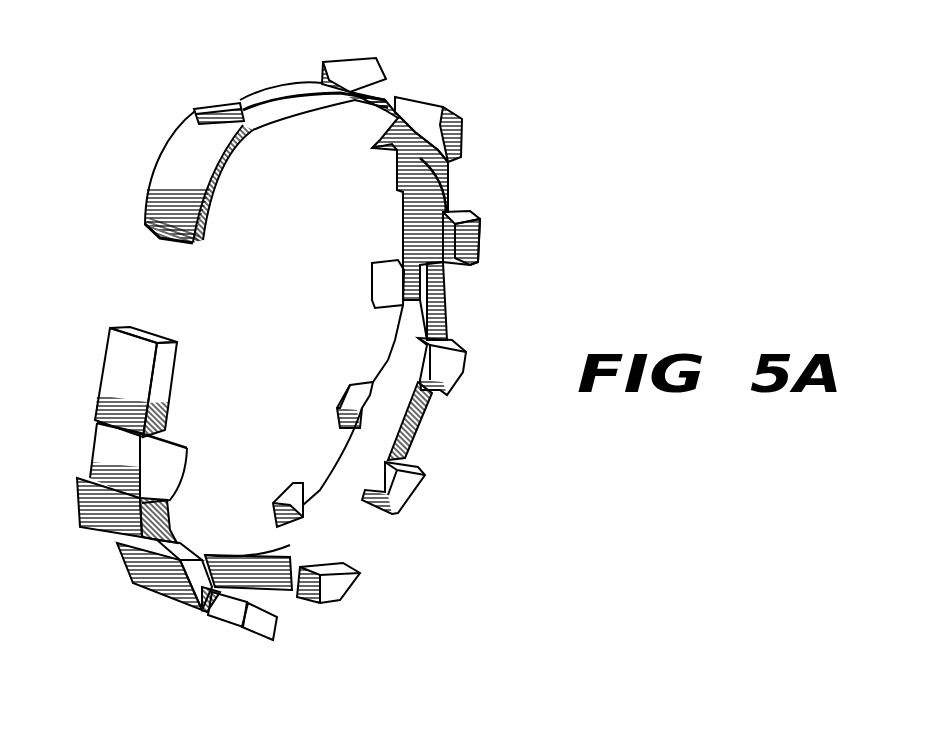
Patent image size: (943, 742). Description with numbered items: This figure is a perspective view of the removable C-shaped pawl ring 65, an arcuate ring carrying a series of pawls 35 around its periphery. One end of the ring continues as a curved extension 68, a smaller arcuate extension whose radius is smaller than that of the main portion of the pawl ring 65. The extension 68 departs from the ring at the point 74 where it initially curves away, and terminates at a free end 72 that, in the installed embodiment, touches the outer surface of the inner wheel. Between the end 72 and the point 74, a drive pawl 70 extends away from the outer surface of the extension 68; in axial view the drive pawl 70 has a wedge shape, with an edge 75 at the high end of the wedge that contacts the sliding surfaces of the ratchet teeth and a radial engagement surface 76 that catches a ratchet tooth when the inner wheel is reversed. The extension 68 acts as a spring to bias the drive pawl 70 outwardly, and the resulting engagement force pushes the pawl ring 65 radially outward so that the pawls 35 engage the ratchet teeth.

The pawls 35 is at (430, 373).
The pawl ring 65 is at (118, 365).
The curved extension 68 is at (165, 169).
The drive pawl 70 is at (207, 110).
The end 72 is at (163, 237).
The point 74 is at (347, 83).
The edge 75 is at (477, 213).
The radial engagement surface 76 is at (482, 238).